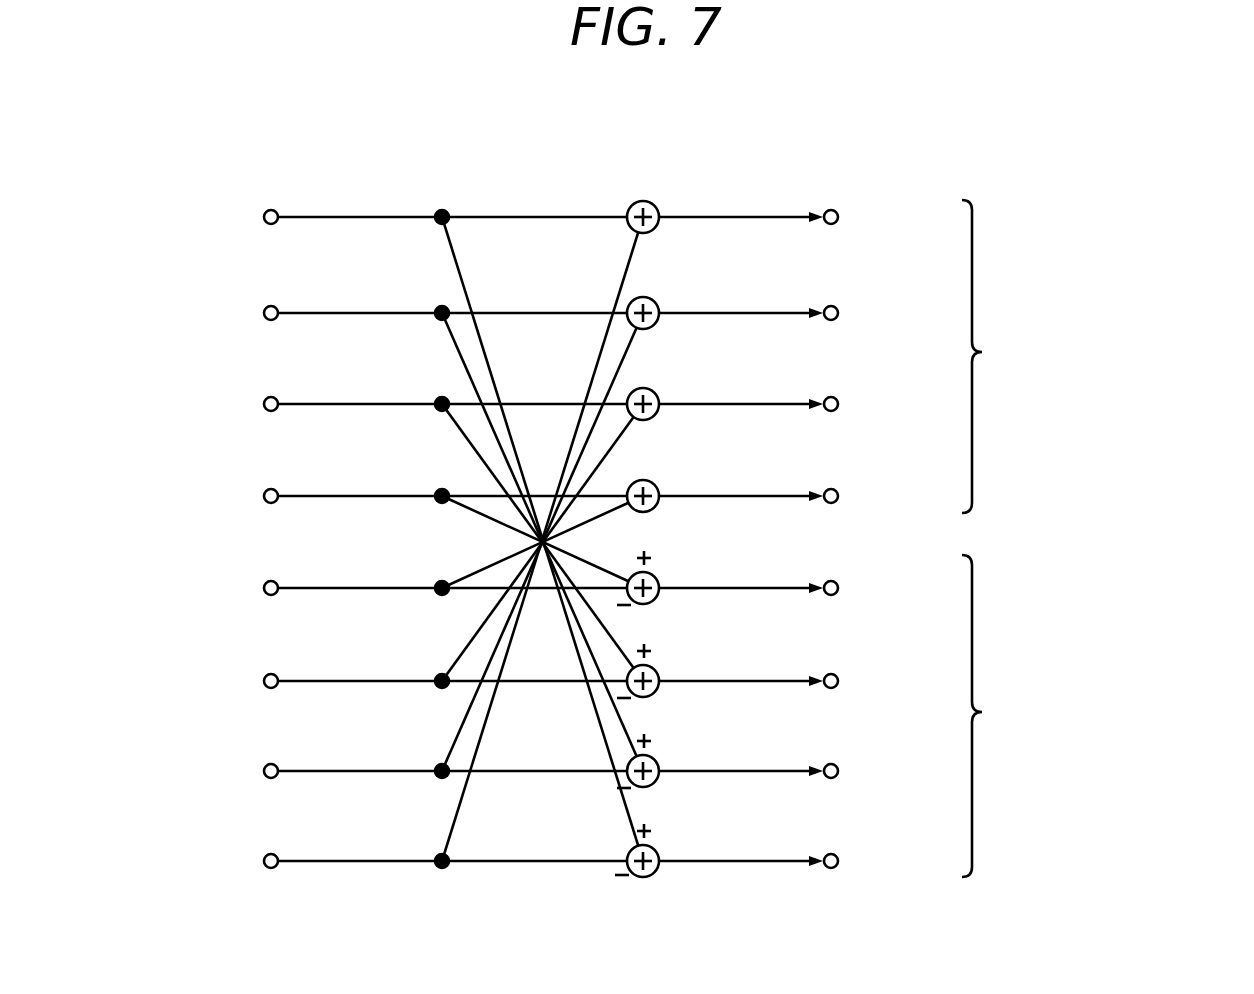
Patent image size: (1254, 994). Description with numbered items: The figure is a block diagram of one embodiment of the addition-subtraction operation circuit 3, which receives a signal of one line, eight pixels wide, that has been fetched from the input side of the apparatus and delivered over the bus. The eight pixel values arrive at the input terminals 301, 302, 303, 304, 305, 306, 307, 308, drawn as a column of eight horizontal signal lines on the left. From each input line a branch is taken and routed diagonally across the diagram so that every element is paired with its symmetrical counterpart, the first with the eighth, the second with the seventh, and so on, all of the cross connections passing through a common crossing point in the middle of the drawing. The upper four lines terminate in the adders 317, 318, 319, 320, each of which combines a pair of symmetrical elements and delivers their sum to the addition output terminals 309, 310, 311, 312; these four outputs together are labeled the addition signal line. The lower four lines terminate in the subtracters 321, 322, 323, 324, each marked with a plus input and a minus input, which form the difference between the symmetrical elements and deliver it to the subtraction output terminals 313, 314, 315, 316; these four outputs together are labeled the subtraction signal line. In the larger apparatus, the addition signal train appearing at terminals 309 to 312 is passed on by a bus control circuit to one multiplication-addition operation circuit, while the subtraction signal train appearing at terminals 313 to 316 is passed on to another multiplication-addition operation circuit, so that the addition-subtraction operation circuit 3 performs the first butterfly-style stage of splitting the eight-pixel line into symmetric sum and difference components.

The addition-subtraction operation circuit 3 is at (535, 142).
The input terminal 301 is at (266, 211).
The input terminal 302 is at (266, 307).
The input terminal 303 is at (266, 398).
The input terminal 304 is at (266, 490).
The input terminal 305 is at (266, 582).
The input terminal 306 is at (266, 675).
The input terminal 307 is at (266, 765).
The input terminal 308 is at (266, 855).
The addition output terminal 309 is at (836, 212).
The addition output terminal 310 is at (836, 308).
The addition output terminal 311 is at (836, 399).
The addition output terminal 312 is at (836, 491).
The subtraction output terminal 313 is at (836, 583).
The subtraction output terminal 314 is at (836, 676).
The subtraction output terminal 315 is at (836, 766).
The subtraction output terminal 316 is at (836, 856).
The adder 317 is at (654, 206).
The adder 318 is at (654, 302).
The adder 319 is at (654, 393).
The adder 320 is at (654, 485).
The subtracter 321 is at (654, 577).
The subtracter 322 is at (654, 670).
The subtracter 323 is at (654, 760).
The subtracter 324 is at (654, 850).